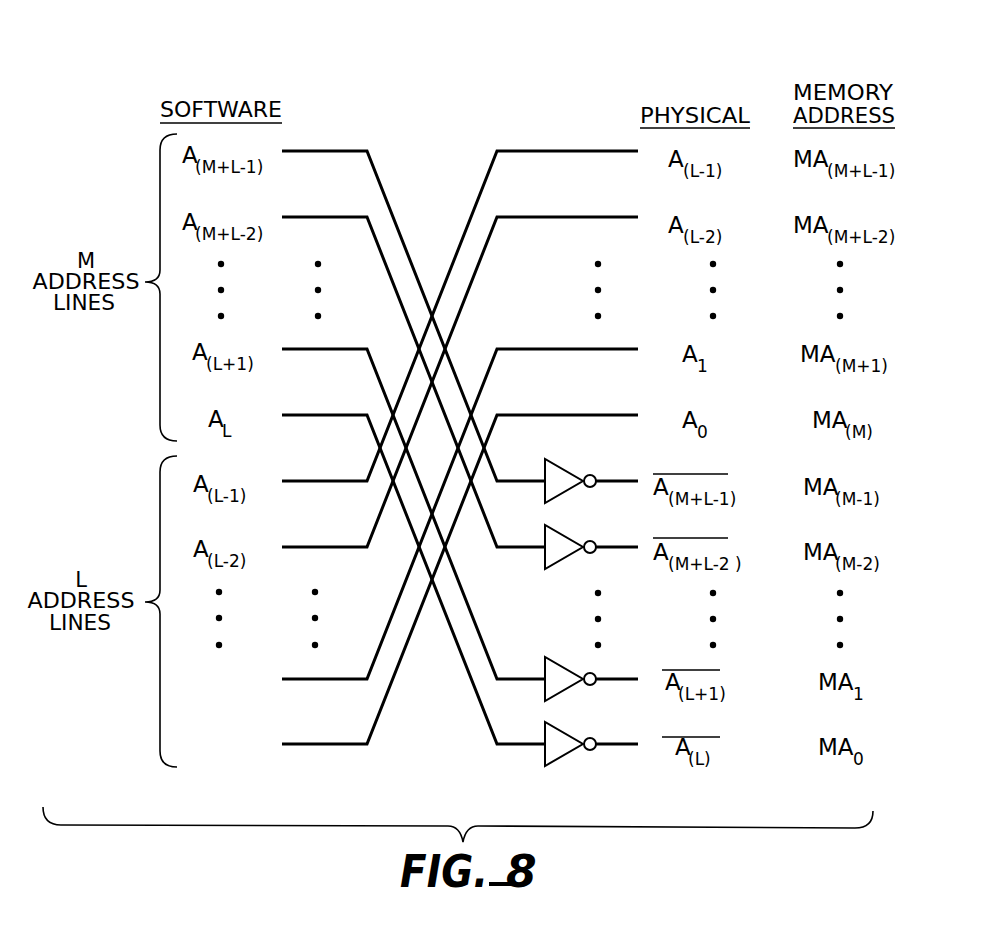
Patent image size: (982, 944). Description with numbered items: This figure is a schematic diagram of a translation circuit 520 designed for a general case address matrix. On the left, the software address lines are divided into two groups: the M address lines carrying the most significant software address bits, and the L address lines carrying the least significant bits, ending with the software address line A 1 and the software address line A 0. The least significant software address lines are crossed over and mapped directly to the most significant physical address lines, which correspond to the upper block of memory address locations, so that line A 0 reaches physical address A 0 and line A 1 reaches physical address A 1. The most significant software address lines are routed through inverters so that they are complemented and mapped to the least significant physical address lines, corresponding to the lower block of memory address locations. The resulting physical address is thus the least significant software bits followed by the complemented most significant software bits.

The translation circuit 520 is at (508, 47).
The software address line A1 1 is at (422, 526).
The software address line A0 0 is at (422, 592).